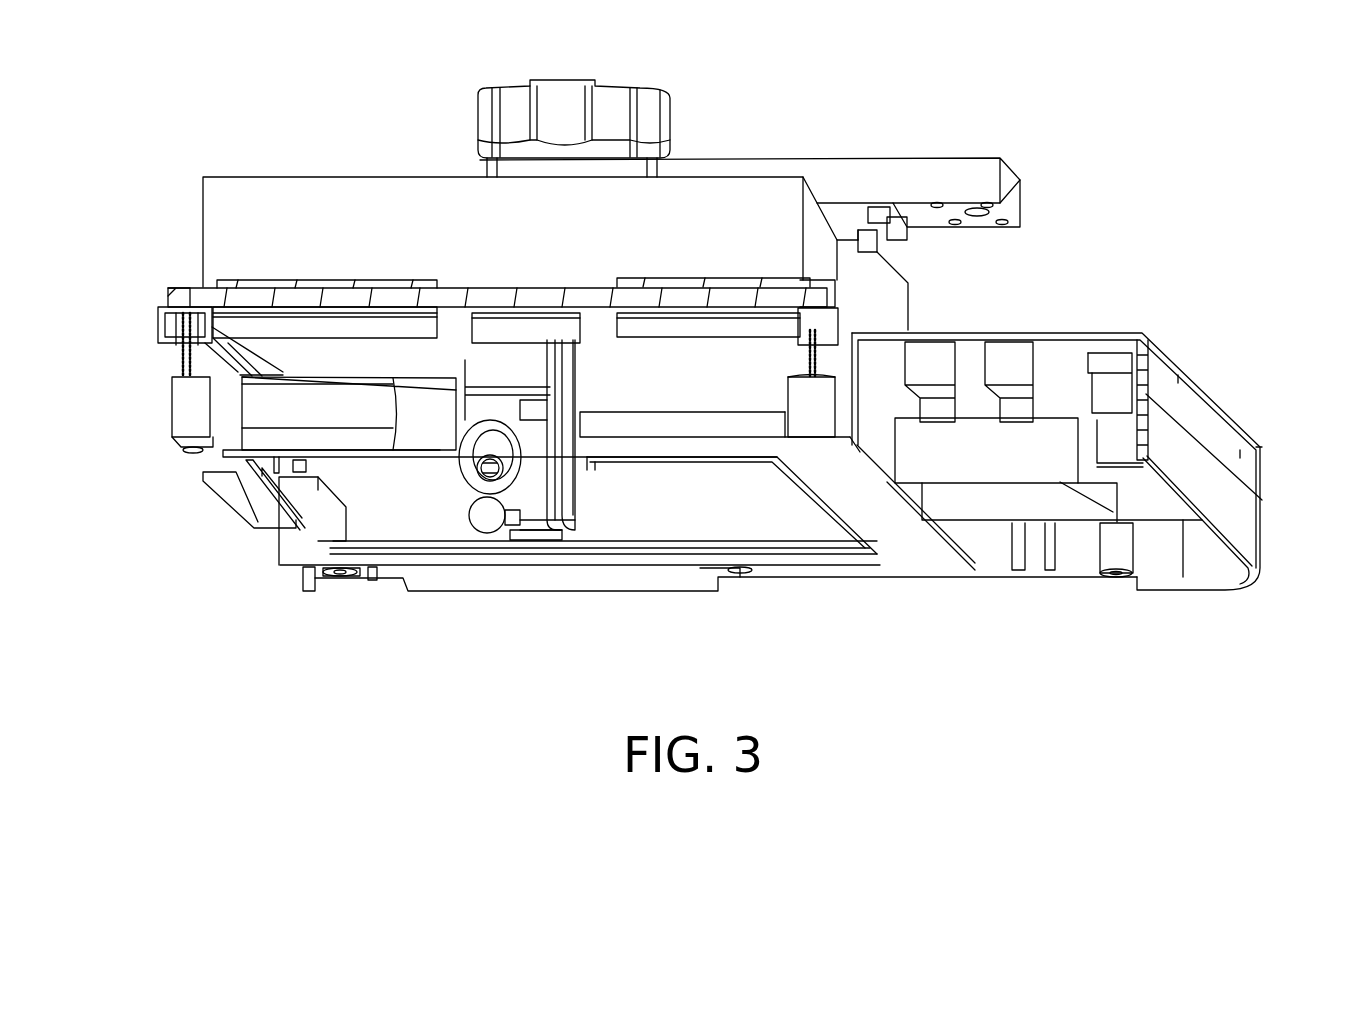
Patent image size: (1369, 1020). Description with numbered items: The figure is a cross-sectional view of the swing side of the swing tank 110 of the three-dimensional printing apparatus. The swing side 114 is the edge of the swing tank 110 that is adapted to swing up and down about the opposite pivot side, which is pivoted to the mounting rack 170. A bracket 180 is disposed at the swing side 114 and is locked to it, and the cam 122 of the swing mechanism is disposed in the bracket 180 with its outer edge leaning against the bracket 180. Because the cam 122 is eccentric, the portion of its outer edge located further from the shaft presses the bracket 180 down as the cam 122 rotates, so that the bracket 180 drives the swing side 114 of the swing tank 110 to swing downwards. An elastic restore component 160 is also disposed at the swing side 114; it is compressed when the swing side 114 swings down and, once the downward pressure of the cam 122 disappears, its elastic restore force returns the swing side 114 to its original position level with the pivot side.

The swing tank 110 is at (168, 247).
The swing side 114 is at (173, 296).
The cam 122 is at (472, 488).
The elastic restore component 160 is at (183, 372).
The mounting rack 170 is at (1247, 517).
The bracket 180 is at (565, 508).